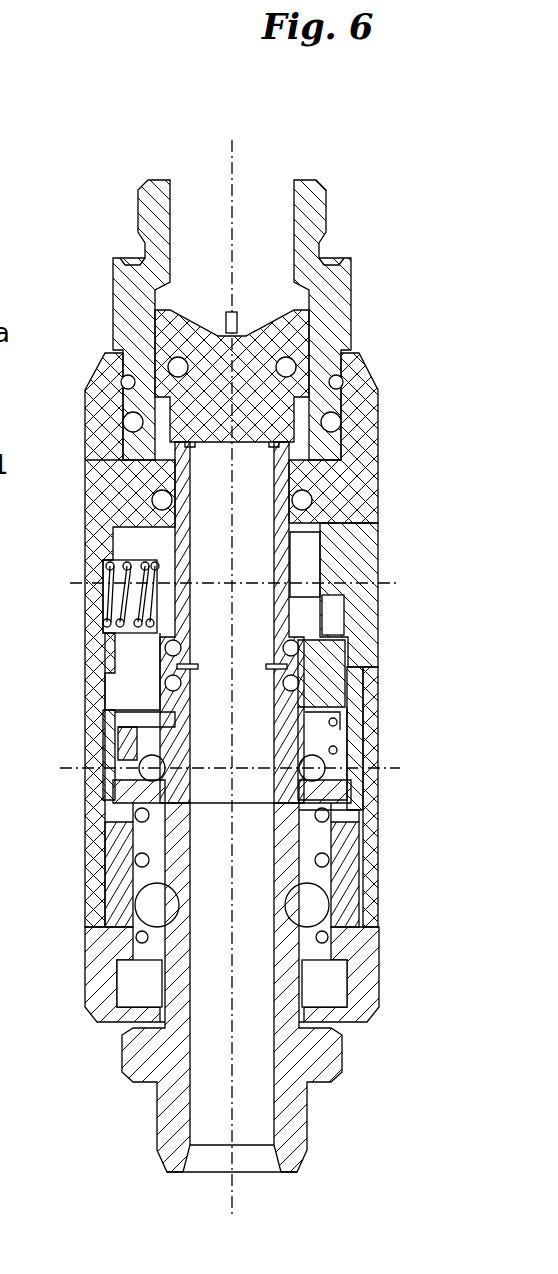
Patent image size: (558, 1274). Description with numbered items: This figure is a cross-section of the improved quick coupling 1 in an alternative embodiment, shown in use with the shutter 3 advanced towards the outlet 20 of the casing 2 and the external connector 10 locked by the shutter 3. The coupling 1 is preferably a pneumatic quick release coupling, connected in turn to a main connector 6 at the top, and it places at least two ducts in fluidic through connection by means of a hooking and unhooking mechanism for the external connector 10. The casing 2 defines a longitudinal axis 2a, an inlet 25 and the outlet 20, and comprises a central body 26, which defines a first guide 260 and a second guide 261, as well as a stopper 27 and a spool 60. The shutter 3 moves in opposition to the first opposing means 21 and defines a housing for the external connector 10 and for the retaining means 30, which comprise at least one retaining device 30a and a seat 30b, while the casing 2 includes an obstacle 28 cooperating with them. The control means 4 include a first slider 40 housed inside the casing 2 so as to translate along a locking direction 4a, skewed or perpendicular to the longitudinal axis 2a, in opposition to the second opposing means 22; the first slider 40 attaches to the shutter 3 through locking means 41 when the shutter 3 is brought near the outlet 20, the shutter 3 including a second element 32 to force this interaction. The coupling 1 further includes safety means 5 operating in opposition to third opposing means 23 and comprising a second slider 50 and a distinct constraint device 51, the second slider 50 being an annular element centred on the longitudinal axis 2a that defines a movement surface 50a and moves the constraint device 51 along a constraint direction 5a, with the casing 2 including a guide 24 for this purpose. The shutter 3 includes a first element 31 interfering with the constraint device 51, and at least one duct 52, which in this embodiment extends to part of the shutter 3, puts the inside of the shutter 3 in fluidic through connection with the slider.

The improved quick coupling 1 is at (135, 142).
The casing 2 is at (49, 609).
The longitudinal axis 2a is at (234, 152).
The shutter 3 is at (330, 857).
The control means 4 is at (415, 503).
The locking direction 4a is at (387, 583).
The safety means 5 is at (108, 735).
The constraint direction 5a is at (80, 770).
The main connector 6 is at (93, 223).
The external connector 10 is at (217, 1098).
The outlet 20 is at (400, 356).
The first opposing means 21 is at (110, 825).
The second opposing means 22 is at (110, 559).
The third opposing means 23 is at (302, 780).
The guide 24 is at (163, 775).
The inlet 25 is at (93, 1035).
The central body 26 is at (123, 700).
The stopper 27 is at (340, 1017).
The obstacle 28 is at (340, 940).
The retaining means 30 is at (277, 602).
The retaining device 30a is at (303, 902).
The seat 30b is at (100, 937).
The first element 31 is at (293, 708).
The second element 32 is at (172, 548).
The first slider 40 is at (380, 528).
The locking means 41 is at (110, 475).
The second slider 50 is at (365, 690).
The movement surface 50a is at (347, 725).
The constraint device 51 is at (360, 770).
The duct 52 is at (163, 667).
The spool 60 is at (218, 410).
The first guide 260 is at (212, 735).
The second guide 261 is at (316, 556).